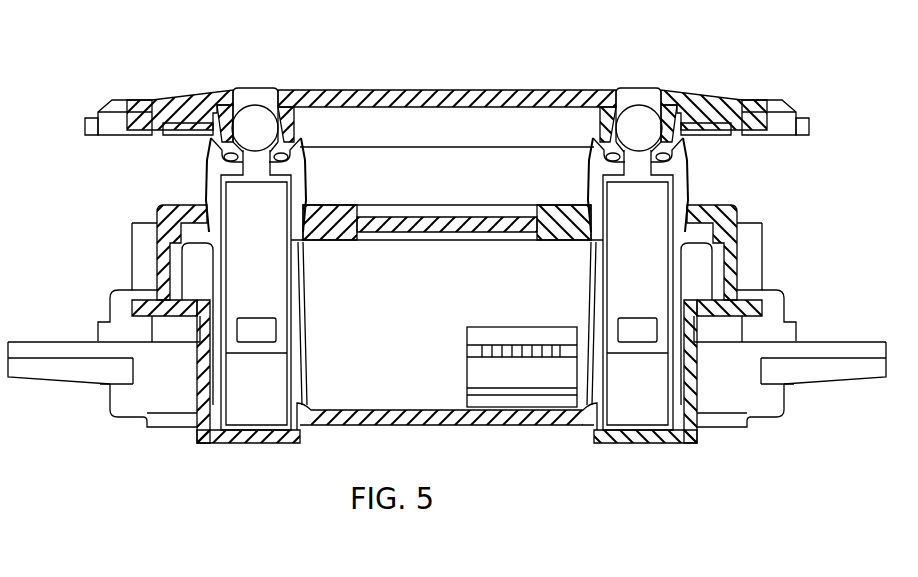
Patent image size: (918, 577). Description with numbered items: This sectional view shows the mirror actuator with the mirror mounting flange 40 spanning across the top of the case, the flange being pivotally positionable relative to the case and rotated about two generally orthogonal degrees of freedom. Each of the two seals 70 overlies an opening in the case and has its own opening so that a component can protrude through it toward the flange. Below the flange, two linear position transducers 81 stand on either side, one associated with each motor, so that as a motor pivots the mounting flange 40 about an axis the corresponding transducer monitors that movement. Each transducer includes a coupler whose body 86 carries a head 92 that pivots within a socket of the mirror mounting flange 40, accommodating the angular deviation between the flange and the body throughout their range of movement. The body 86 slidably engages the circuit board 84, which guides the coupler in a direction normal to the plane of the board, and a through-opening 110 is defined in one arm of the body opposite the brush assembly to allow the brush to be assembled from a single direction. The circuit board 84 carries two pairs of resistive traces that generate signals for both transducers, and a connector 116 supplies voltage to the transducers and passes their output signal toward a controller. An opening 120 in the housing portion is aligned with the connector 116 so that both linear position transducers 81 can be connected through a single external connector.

The mirror mounting flange 40 is at (438, 90).
The head 92 is at (265, 110).
The circuit board 84 is at (273, 403).
The seal 70 is at (303, 158).
The linear position transducer 81 is at (202, 181).
The body 86 is at (283, 270).
The through-opening 110 is at (268, 328).
The connector 116 is at (467, 373).
The opening 120 is at (595, 410).